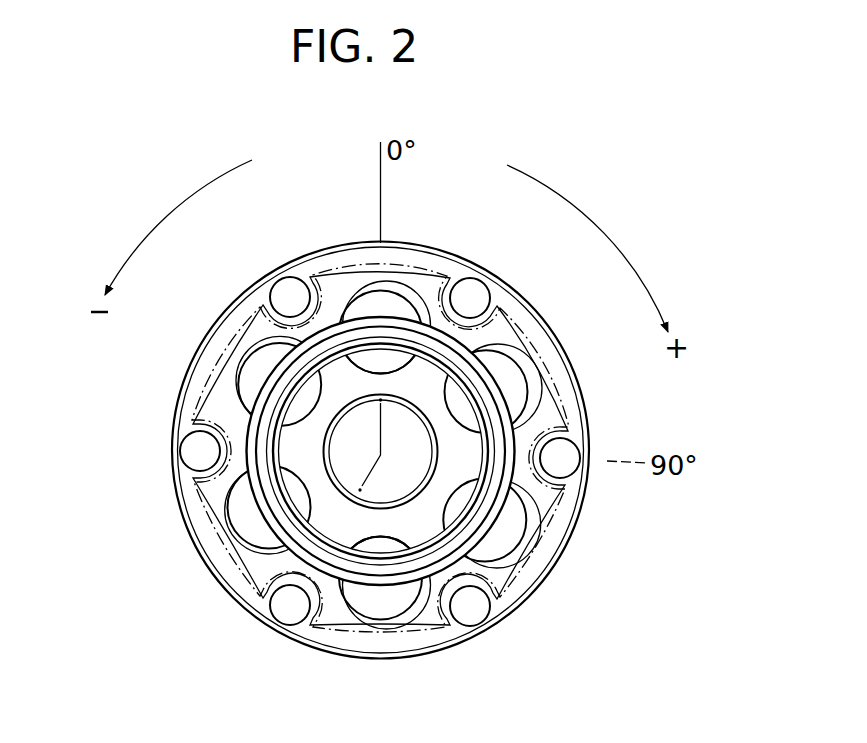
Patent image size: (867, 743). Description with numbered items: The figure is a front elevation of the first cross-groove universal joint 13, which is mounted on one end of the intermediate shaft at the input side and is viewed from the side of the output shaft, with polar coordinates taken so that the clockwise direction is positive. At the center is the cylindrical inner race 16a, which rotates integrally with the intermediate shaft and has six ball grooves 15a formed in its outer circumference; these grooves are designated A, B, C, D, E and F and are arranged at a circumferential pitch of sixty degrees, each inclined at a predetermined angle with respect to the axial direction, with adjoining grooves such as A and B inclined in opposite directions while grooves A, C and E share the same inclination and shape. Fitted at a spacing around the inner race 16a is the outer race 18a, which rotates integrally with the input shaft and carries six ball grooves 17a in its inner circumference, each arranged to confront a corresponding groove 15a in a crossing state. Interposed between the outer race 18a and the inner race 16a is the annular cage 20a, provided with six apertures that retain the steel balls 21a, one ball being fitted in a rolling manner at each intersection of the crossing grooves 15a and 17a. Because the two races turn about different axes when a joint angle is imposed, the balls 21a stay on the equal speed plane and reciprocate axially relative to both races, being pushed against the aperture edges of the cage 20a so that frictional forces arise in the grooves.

The first cross-groove universal joint 13 is at (424, 224).
The ball grooves of the inner race 15a is at (348, 365).
The inner race 16a is at (290, 452).
The ball grooves of the outer race 17a is at (487, 353).
The outer race 18a is at (366, 640).
The annular cage 20a is at (317, 357).
The steel balls 21a is at (395, 358).
The ball groove A is at (392, 314).
The ball groove B is at (502, 375).
The ball groove C is at (499, 540).
The ball groove D is at (382, 601).
The ball groove E is at (252, 512).
The ball groove F is at (252, 388).